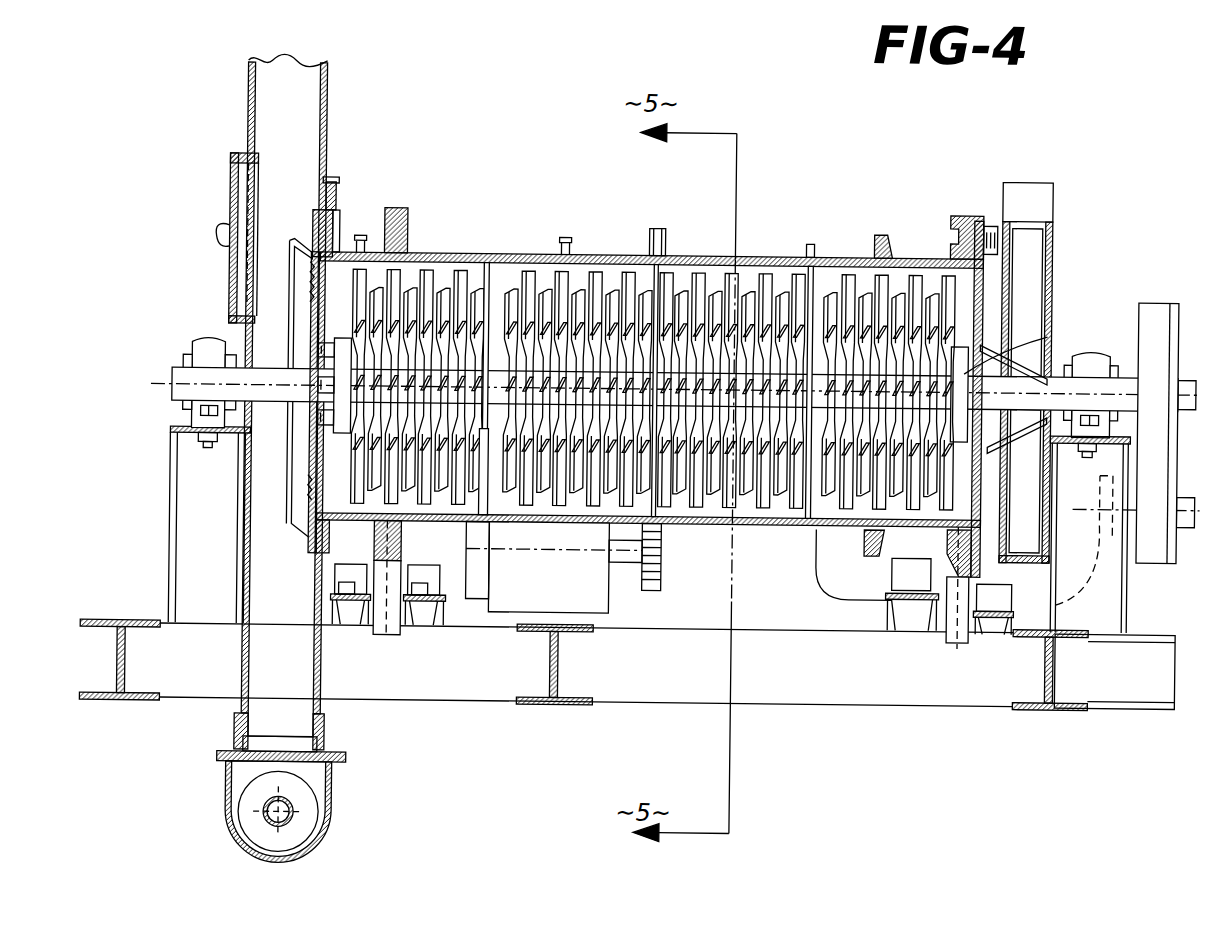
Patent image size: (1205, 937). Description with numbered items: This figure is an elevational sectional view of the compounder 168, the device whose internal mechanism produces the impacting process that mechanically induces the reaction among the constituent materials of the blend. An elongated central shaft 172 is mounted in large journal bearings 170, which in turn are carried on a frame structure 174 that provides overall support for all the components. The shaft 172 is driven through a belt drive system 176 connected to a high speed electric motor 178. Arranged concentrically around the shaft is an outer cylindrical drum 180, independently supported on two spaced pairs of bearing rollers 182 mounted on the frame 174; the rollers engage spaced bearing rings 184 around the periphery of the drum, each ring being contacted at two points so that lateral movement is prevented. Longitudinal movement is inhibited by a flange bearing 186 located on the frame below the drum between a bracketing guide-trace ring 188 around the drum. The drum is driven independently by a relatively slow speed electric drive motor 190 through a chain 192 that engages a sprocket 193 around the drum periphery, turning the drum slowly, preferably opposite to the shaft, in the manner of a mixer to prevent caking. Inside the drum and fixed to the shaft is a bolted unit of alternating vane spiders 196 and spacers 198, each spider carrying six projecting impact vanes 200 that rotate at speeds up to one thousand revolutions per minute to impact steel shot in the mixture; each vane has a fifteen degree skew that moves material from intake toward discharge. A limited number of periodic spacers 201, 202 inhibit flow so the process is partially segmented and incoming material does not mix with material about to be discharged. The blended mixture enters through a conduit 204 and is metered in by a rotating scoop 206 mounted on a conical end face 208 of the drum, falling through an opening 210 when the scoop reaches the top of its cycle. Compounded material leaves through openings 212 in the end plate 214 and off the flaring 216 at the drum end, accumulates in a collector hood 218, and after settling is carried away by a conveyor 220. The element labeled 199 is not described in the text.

The compounder 168 is at (1052, 212).
The journal bearings 170 is at (204, 344).
The central shaft 172 is at (172, 390).
The frame structure 174 is at (476, 700).
The belt drive system 176 is at (1151, 306).
The high speed electric motor 178 is at (1126, 596).
The outer cylindrical drum 180 is at (808, 276).
The bearing rollers 182 is at (392, 627).
The bearing rings 184 is at (398, 212).
The flange bearing 186 is at (876, 578).
The guide-trace ring 188 is at (882, 240).
The electric drive motor 190 is at (610, 605).
The chain 192 is at (658, 566).
The sprocket 193 is at (650, 245).
The vane spiders 196 is at (360, 243).
The spacers 198 is at (352, 384).
The guide cone 199 is at (963, 372).
The impact vanes 200 is at (433, 276).
The periodic spacers 201 is at (483, 276).
The periodic spacers 202 is at (497, 287).
The conduit 204 is at (1031, 183).
The rotating scoop 206 is at (1054, 645).
The conical end face 208 is at (1017, 357).
The opening 210 is at (1040, 428).
The openings 212 is at (308, 268).
The end plate 214 is at (308, 462).
The flaring 216 is at (301, 244).
The collector hood 218 is at (303, 124).
The conveyor 220 is at (300, 815).